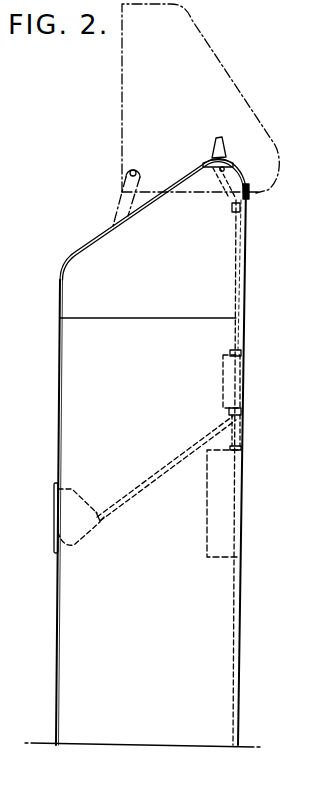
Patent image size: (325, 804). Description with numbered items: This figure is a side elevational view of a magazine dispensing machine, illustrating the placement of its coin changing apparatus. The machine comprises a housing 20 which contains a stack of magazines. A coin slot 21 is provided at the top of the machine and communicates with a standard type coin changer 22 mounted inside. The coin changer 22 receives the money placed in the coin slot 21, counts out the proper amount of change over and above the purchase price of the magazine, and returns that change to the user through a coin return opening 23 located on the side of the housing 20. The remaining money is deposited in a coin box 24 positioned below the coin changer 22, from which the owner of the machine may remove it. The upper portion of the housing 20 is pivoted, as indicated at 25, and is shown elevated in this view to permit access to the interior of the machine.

The housing 20 is at (60, 453).
The coin slot 21 is at (216, 148).
The coin changer 22 is at (223, 388).
The coin return opening 23 is at (55, 521).
The coin box 24 is at (207, 535).
The pivot 25 is at (250, 191).